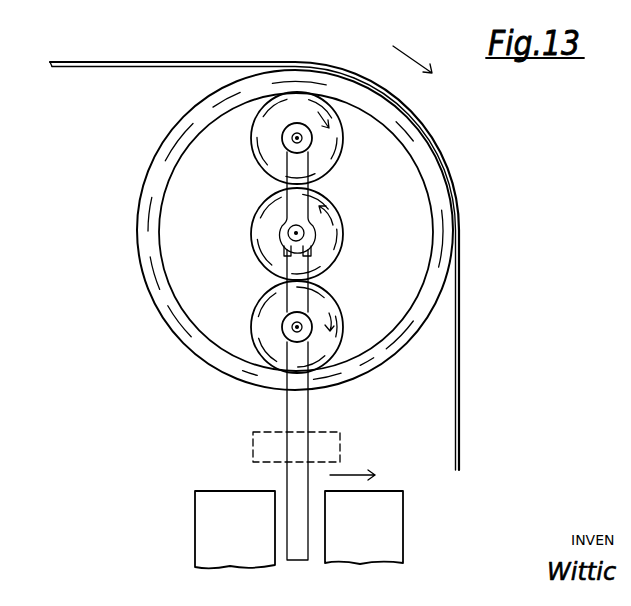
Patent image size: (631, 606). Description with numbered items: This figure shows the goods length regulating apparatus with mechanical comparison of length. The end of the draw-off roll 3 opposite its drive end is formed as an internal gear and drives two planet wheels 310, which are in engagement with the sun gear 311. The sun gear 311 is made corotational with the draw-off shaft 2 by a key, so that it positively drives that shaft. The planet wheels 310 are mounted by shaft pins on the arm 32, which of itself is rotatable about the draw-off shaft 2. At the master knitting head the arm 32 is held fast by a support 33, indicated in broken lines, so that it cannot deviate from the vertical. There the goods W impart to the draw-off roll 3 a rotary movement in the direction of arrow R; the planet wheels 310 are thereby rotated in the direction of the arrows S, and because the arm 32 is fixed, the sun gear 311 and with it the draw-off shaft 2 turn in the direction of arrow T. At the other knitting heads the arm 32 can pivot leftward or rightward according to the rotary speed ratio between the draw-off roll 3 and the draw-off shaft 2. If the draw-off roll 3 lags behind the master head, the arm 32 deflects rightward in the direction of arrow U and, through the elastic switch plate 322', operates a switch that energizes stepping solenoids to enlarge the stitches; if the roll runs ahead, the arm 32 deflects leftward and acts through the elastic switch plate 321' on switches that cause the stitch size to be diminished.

The draw-off roll 3 is at (432, 160).
The goods W is at (460, 430).
The planet wheels 310 is at (330, 145).
The sun gear 311 is at (266, 212).
The draw-off shaft 2 is at (283, 238).
The arm 32 is at (300, 412).
The support 33 is at (250, 450).
The switch plate 321' is at (176, 528).
The switch plate 322' is at (429, 527).
The arrows S is at (318, 112).
The arrow T is at (332, 223).
The arrow R is at (415, 60).
The arrow U is at (343, 475).